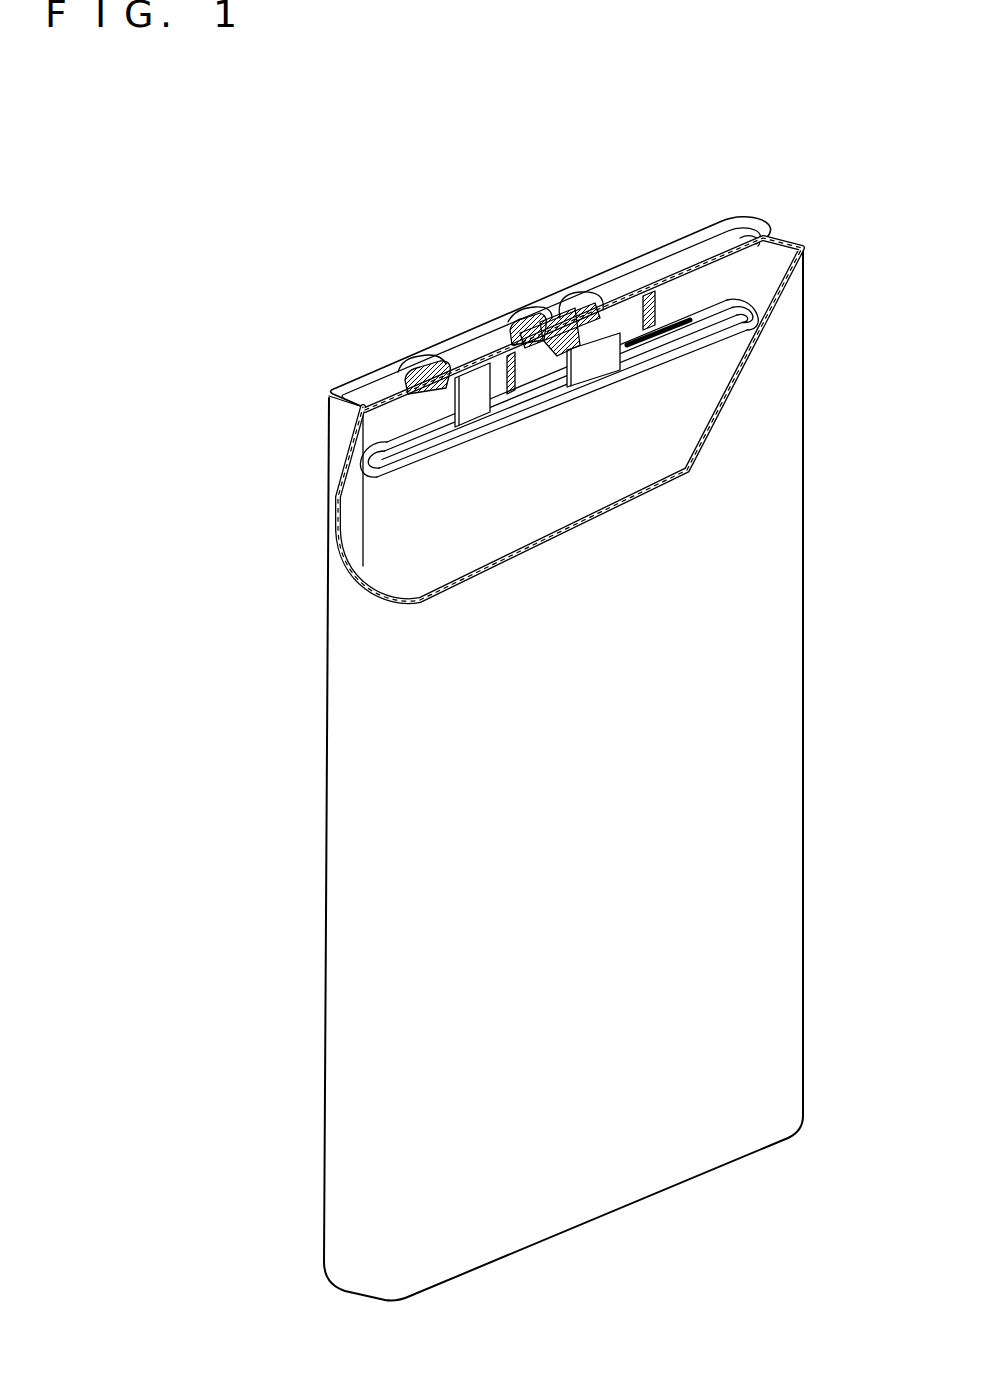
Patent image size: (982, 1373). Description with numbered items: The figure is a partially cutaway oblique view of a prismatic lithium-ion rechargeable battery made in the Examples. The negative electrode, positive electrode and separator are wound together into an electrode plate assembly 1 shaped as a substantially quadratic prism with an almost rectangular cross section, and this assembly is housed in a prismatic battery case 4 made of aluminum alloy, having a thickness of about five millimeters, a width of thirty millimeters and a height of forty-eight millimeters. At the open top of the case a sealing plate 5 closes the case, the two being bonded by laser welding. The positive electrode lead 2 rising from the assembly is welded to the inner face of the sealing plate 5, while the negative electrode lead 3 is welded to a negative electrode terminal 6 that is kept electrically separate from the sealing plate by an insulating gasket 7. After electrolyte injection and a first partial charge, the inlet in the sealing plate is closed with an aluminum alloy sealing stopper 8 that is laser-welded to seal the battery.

The electrode plate assembly 1 is at (568, 505).
The positive electrode lead 2 is at (473, 412).
The negative electrode lead 3 is at (604, 358).
The battery case 4 is at (763, 957).
The sealing plate 5 is at (622, 289).
The negative electrode terminal 6 is at (556, 330).
The insulating gasket 7 is at (508, 318).
The sealing stopper 8 is at (415, 375).